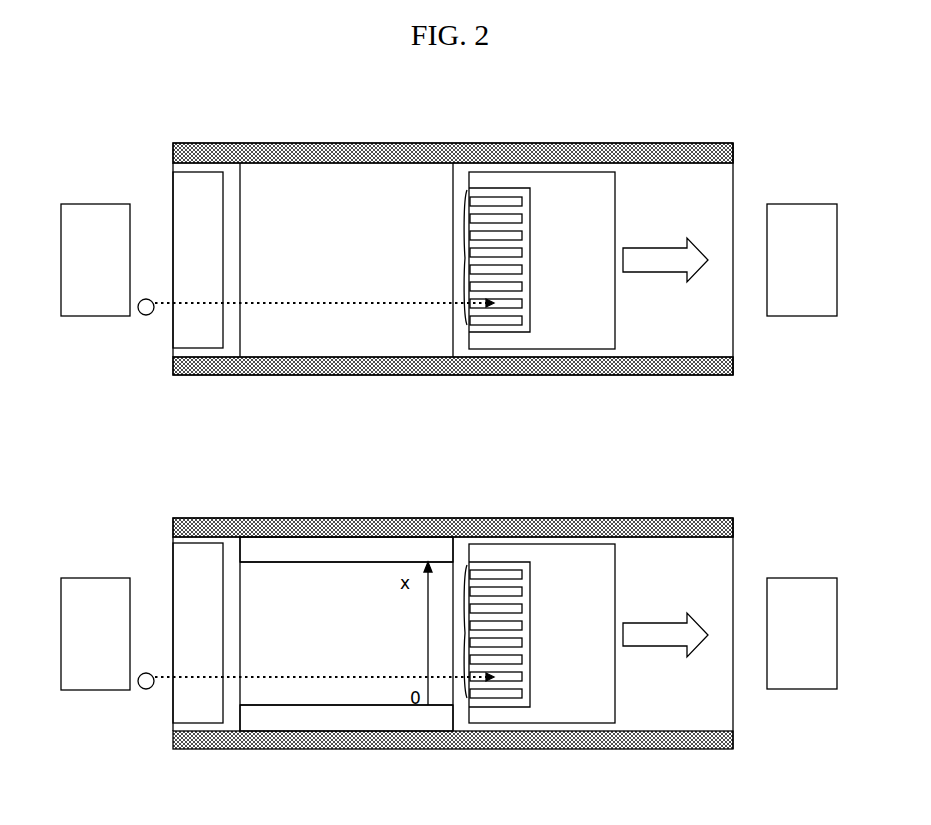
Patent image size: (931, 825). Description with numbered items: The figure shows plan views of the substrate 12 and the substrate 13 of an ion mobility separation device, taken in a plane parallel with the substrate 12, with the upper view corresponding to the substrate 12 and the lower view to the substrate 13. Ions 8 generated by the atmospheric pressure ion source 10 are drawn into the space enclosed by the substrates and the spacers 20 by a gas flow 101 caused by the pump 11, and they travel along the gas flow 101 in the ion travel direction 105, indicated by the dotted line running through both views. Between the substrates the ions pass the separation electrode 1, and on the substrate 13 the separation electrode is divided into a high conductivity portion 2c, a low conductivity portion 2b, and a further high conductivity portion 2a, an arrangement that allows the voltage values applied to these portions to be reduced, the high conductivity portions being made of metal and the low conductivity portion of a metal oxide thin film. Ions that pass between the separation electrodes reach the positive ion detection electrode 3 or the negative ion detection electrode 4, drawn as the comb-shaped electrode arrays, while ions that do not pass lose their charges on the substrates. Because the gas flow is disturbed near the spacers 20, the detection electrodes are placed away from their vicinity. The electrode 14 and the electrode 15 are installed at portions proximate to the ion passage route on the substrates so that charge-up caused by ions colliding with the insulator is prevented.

The separation electrode 1 is at (274, 178).
The high conductivity portion 2a is at (385, 716).
The low conductivity portion 2b is at (345, 552).
The high conductivity portion 2c is at (275, 550).
The positive ion detection electrode 3 is at (465, 633).
The negative ion detection electrode 4 is at (465, 258).
The ions 8 is at (141, 316).
The atmospheric pressure ion source 10 is at (95, 447).
The pump 11 is at (802, 446).
The substrate 12 is at (653, 178).
The substrate 13 is at (683, 553).
The electrode 14 is at (577, 568).
The electrode 15 is at (181, 568).
The spacers 20 is at (222, 527).
The gas flow 101 is at (654, 247).
The ion travel direction 105 is at (325, 303).